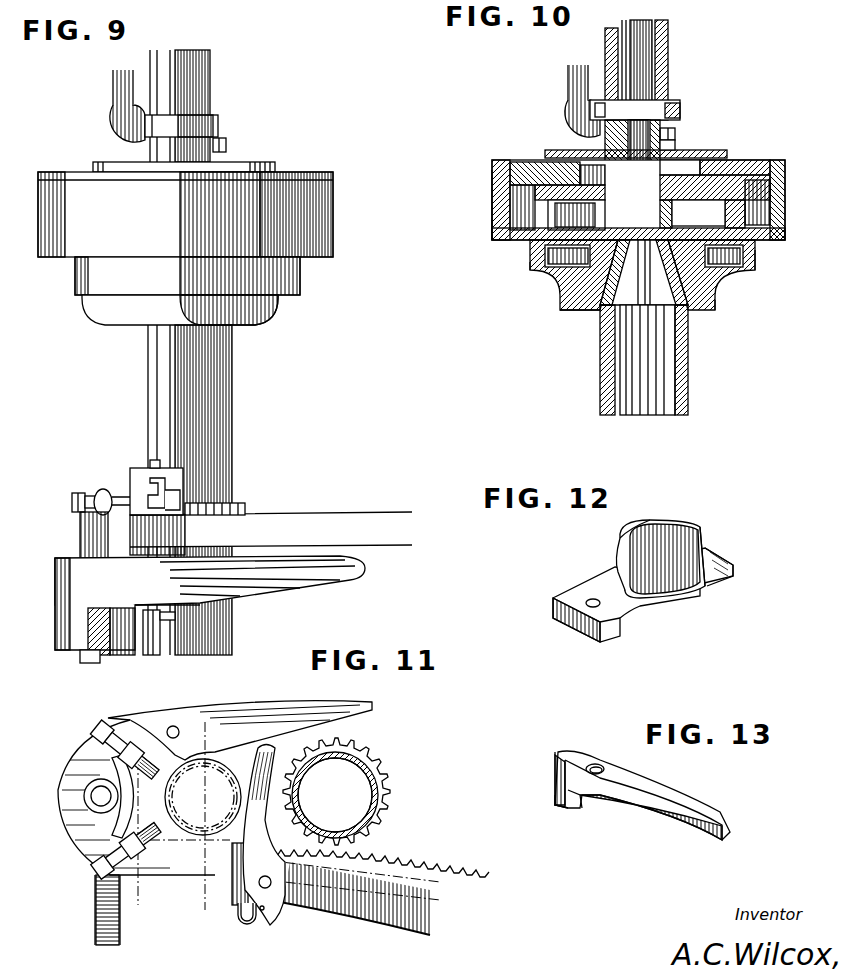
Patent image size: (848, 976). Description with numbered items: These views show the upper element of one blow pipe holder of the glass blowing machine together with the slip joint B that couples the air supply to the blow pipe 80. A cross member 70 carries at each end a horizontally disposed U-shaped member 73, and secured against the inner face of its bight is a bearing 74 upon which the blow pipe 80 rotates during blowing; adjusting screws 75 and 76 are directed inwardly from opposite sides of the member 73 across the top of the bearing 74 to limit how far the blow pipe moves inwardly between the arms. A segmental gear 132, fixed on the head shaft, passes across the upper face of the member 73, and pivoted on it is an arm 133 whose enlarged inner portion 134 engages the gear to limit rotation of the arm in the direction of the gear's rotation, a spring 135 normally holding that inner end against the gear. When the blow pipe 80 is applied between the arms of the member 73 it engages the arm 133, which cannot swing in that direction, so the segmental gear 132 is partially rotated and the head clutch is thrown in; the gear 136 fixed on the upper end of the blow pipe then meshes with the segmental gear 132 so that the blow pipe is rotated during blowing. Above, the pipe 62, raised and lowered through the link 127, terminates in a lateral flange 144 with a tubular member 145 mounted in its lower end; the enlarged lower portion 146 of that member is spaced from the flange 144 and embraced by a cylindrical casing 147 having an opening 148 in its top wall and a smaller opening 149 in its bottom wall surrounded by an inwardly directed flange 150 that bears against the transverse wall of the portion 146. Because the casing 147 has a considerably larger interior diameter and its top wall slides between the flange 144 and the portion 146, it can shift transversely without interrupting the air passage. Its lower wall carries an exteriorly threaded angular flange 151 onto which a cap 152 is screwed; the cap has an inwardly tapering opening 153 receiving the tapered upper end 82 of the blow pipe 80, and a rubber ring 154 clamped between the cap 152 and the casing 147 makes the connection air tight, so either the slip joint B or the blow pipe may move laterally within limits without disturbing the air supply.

In FIG. 9, the pipe 62 is at (210, 78).
In FIG. 10, the pipe 62 is at (660, 70).
In FIG. 9, the cross member 70 is at (80, 666).
In FIG. 11, the cross member 70 is at (96, 926).
In FIG. 9, the U-shaped member 73 is at (280, 593).
In FIG. 11, the U-shaped member 73 is at (300, 710).
In FIG. 9, the bearing 74 is at (152, 656).
In FIG. 11, the bearing 74 is at (162, 816).
In FIG. 12, the bearing 74 is at (620, 542).
In FIG. 9, the adjusting screw 75 is at (78, 492).
In FIG. 11, the adjusting screw 75 is at (90, 872).
In FIG. 11, the adjusting screw 76 is at (100, 728).
In FIG. 9, the blow pipe 80 is at (232, 389).
In FIG. 10, the blow pipe 80 is at (688, 378).
In FIG. 11, the blow pipe 80 is at (372, 778).
In FIG. 10, the tapered upper end 82 is at (686, 323).
In FIG. 9, the link 127 is at (114, 93).
In FIG. 10, the link 127 is at (568, 89).
In FIG. 9, the segmental gear 132 is at (373, 514).
In FIG. 11, the segmental gear 132 is at (405, 872).
In FIG. 9, the arm 133 is at (140, 468).
In FIG. 11, the arm 133 is at (270, 832).
In FIG. 13, the arm 133 is at (670, 790).
In FIG. 9, the enlarged portion 134 is at (178, 497).
In FIG. 11, the enlarged portion 134 is at (265, 918).
In FIG. 13, the enlarged portion 134 is at (562, 806).
In FIG. 9, the spring 135 is at (150, 494).
In FIG. 11, the spring 135 is at (246, 926).
In FIG. 9, the gear 136 is at (244, 510).
In FIG. 11, the gear 136 is at (356, 750).
In FIG. 9, the lateral flange 144 is at (272, 158).
In FIG. 10, the lateral flange 144 is at (708, 150).
In FIG. 10, the tubular member 145 is at (672, 150).
In FIG. 10, the enlarged lower portion 146 is at (492, 226).
In FIG. 9, the cylindrical casing 147 is at (333, 234).
In FIG. 10, the cylindrical casing 147 is at (492, 191).
In FIG. 10, the opening 148 is at (492, 164).
In FIG. 10, the opening 149 is at (530, 257).
In FIG. 10, the inwardly directed flange 150 is at (673, 213).
In FIG. 10, the angular flange 151 is at (530, 282).
In FIG. 9, the cap 152 is at (283, 298).
In FIG. 10, the cap 152 is at (755, 265).
In FIG. 10, the inwardly tapering opening 153 is at (604, 298).
In FIG. 10, the rubber ring 154 is at (716, 306).
In FIG. 9, the slip joint B is at (340, 183).
In FIG. 10, the slip joint B is at (558, 311).